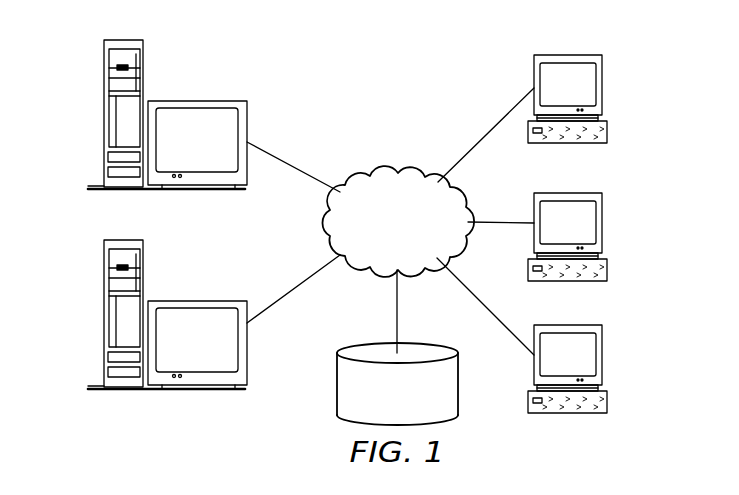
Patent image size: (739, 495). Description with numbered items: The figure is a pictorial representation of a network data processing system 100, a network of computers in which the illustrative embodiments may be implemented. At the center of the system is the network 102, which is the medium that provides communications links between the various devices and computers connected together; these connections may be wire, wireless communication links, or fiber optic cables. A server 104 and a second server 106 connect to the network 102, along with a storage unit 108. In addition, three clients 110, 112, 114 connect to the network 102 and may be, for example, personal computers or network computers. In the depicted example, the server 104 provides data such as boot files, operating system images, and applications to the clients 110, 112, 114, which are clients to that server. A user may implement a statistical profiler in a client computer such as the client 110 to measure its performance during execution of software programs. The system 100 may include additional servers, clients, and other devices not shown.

The network data processing system 100 is at (448, 76).
The network 102 is at (371, 177).
The server 104 is at (103, 114).
The server 106 is at (103, 314).
The storage unit 108 is at (337, 392).
The client 110 is at (603, 87).
The client 112 is at (603, 223).
The client 114 is at (603, 358).